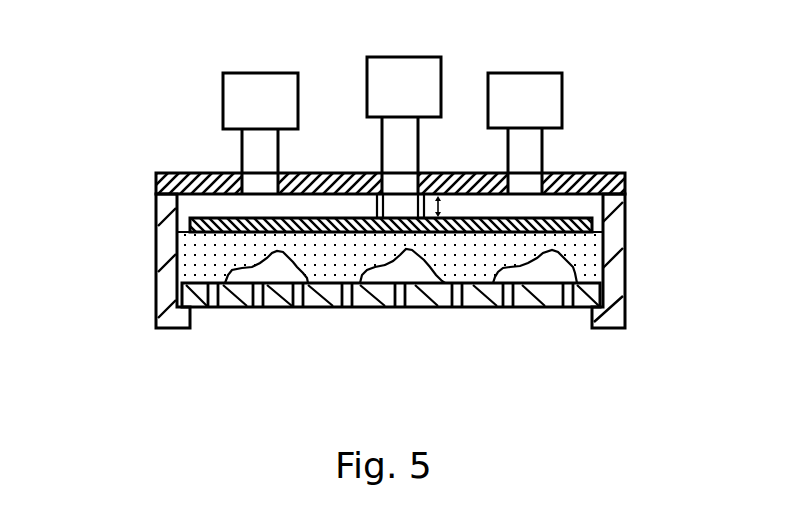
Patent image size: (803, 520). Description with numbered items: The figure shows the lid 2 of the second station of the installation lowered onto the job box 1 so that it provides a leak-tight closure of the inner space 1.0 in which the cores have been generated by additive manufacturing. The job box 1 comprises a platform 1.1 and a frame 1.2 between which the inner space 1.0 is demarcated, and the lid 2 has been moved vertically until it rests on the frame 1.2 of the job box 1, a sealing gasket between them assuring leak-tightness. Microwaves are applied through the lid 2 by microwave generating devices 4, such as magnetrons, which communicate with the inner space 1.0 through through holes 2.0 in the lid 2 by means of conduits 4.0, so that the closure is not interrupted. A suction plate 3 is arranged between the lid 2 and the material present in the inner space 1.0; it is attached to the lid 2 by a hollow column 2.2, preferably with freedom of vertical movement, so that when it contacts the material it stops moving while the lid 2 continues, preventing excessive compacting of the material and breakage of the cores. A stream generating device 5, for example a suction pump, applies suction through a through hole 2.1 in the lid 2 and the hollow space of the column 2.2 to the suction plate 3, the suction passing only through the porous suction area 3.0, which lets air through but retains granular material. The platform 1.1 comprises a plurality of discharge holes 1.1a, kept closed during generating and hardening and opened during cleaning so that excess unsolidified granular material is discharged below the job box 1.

The job box 1 is at (388, 292).
The inner space 1.0 is at (582, 209).
The platform 1.1 is at (402, 336).
The discharge holes 1.1a is at (509, 300).
The frame 1.2 is at (168, 297).
The lid 2 is at (168, 187).
The through hole 2.0 is at (523, 183).
The through hole 2.1 is at (390, 180).
The column 2.2 is at (380, 210).
The suction plate 3 is at (575, 226).
The suction area 3.0 is at (395, 250).
The microwave generating device 4 is at (366, 106).
The conduit 4.0 is at (260, 152).
The stream generating device 5 is at (364, 109).